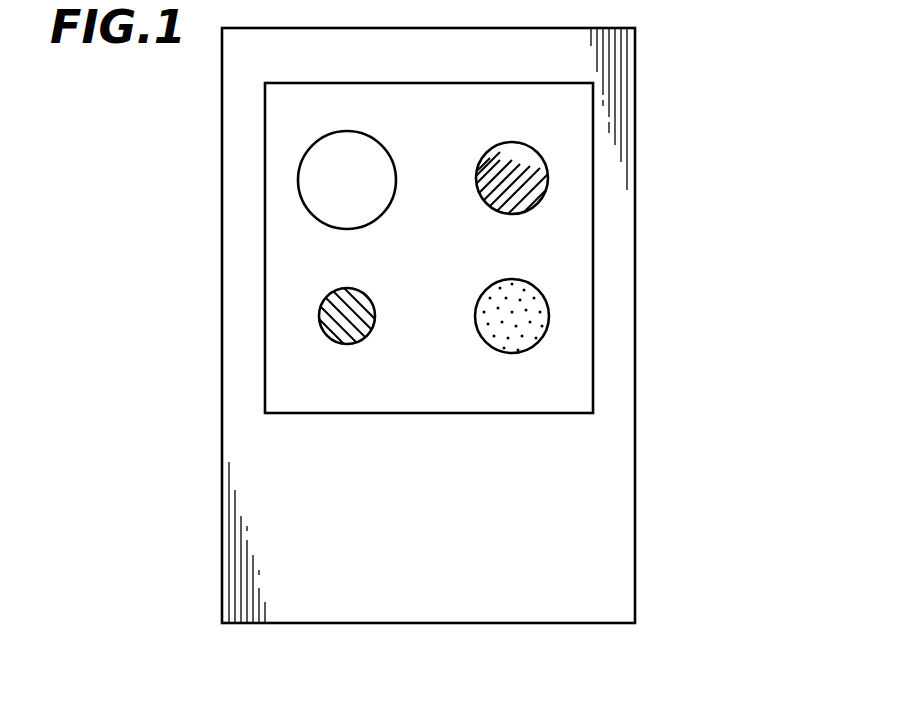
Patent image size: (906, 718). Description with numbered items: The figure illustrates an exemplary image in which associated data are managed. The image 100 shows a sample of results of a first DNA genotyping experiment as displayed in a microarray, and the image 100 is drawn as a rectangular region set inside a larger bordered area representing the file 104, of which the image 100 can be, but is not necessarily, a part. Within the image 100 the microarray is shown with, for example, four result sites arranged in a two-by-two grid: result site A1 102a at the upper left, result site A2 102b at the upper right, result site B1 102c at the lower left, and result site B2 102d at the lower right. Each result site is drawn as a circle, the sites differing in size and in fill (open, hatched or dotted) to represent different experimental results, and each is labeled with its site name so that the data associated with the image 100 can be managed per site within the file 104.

The image 100 is at (404, 423).
The file 104 is at (640, 478).
The result site A1 102a is at (298, 172).
The result site A2 102b is at (549, 180).
The result site B1 102c is at (318, 318).
The result site B2 102d is at (549, 314).